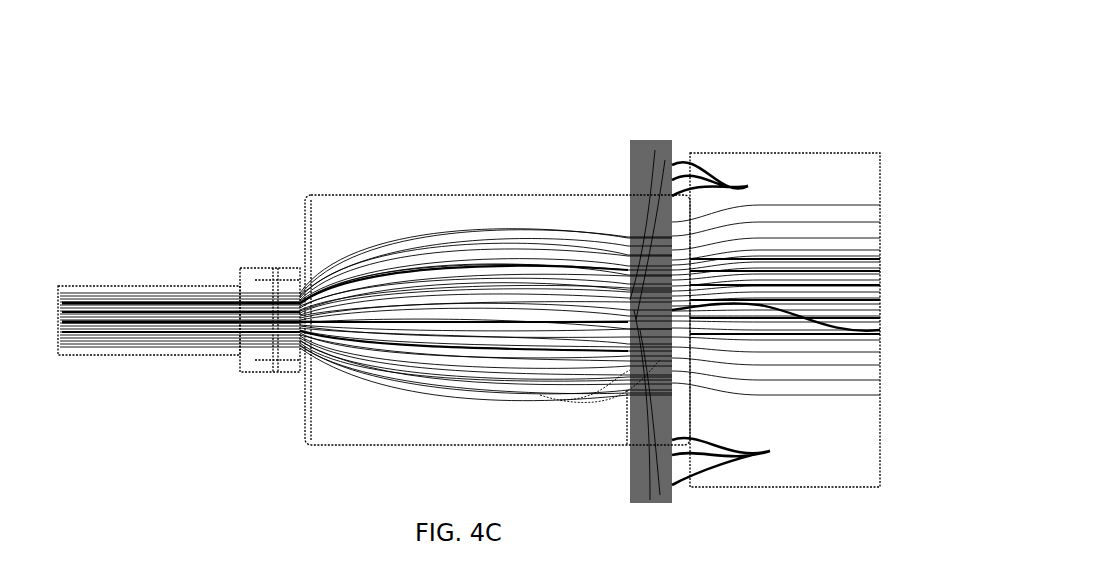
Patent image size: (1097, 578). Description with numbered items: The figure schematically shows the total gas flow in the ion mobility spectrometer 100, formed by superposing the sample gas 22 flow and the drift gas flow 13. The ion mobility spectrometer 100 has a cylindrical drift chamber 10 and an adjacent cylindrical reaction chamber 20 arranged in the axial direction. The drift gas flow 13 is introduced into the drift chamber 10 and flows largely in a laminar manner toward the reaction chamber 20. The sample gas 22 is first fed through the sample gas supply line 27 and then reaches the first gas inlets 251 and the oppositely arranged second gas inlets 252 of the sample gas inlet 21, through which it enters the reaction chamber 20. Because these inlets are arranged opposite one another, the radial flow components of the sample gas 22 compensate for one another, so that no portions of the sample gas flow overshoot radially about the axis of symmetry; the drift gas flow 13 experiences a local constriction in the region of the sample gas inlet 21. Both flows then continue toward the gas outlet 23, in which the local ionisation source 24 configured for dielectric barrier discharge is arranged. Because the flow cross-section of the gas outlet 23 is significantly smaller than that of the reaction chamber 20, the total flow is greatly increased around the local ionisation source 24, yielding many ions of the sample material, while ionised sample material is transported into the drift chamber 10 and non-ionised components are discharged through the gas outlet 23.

The ion mobility spectrometer 100 is at (510, 268).
The drift chamber 10 is at (817, 284).
The drift gas flow 13 is at (872, 250).
The reaction chamber 20 is at (495, 280).
The sample gas inlet 21 is at (672, 150).
The sample gas 22 is at (475, 240).
The gas outlet 23 is at (258, 372).
The local ionisation source 24 is at (256, 310).
The sample gas supply line 27 is at (880, 330).
The first gas inlets 251 is at (737, 180).
The second gas inlets 252 is at (743, 460).